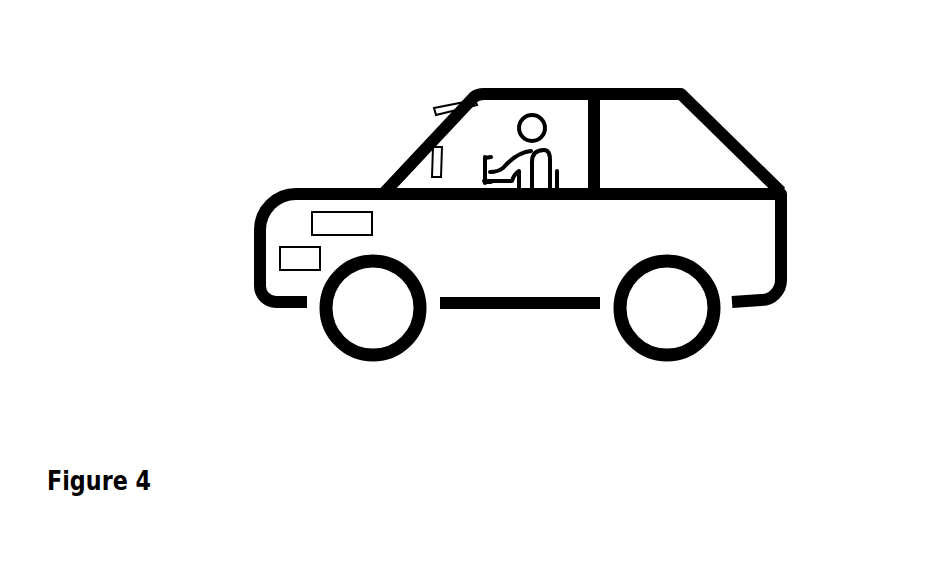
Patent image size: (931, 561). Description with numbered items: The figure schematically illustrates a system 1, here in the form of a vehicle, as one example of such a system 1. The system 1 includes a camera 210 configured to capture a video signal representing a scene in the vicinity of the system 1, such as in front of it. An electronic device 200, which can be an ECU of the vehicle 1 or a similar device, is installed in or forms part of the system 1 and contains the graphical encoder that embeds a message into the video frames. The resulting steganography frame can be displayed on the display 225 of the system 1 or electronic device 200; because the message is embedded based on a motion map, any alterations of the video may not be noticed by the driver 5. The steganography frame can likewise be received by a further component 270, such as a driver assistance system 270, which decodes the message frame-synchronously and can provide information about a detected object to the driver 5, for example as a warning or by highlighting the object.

The system 1 is at (687, 93).
The driver 5 is at (536, 198).
The electronic device 200 is at (312, 225).
The camera 210 is at (433, 110).
The display 225 is at (413, 150).
The driver assistance system 270 is at (280, 258).